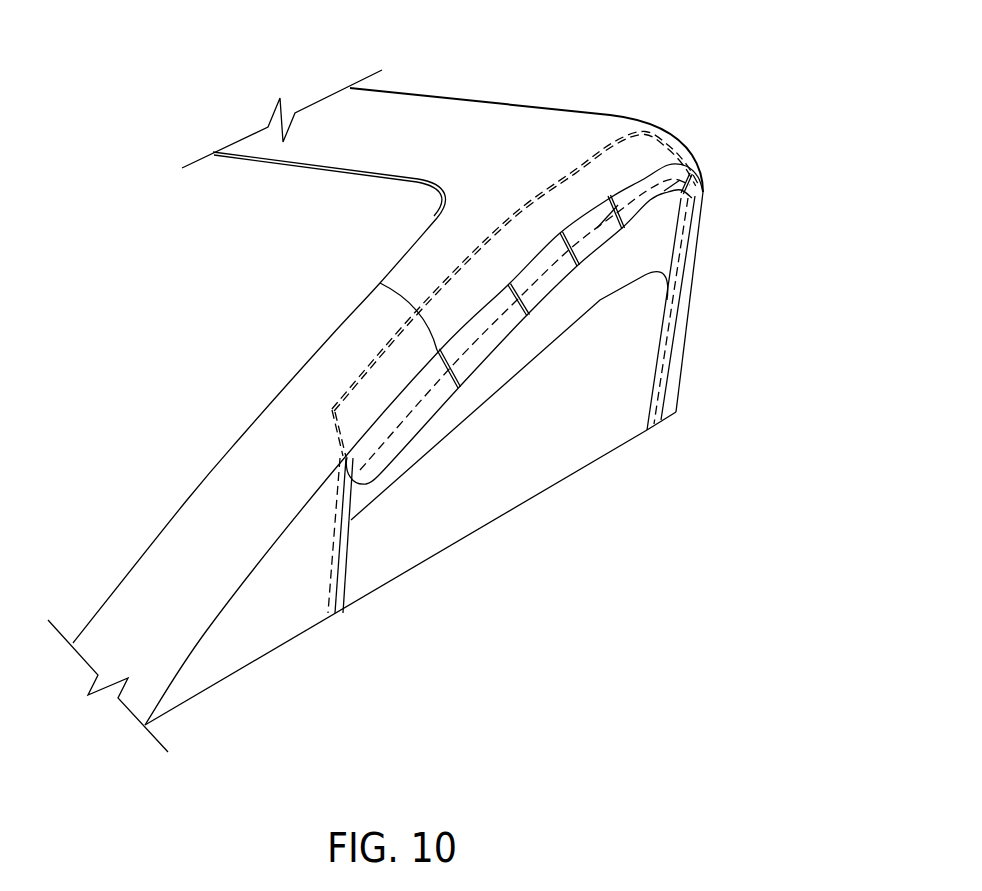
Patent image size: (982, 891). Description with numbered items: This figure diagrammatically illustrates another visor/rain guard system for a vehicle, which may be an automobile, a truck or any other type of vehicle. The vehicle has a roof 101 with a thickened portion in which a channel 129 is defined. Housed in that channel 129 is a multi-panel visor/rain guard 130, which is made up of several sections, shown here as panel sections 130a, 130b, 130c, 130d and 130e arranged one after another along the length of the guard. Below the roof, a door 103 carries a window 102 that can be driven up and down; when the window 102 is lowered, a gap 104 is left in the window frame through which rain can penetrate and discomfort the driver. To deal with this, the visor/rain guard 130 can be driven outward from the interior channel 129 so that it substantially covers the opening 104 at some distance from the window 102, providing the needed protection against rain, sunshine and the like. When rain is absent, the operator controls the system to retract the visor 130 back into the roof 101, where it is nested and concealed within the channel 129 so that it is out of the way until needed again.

The roof 101 is at (498, 118).
The window 102 is at (628, 410).
The door 103 is at (683, 353).
The gap 104 is at (642, 250).
The channel 129 is at (653, 157).
The multi-panel visor/rain guard 130 is at (372, 465).
The panel section 130a is at (420, 408).
The panel section 130b is at (488, 333).
The panel section 130c is at (540, 270).
The panel section 130d is at (617, 190).
The panel section 130e is at (700, 183).